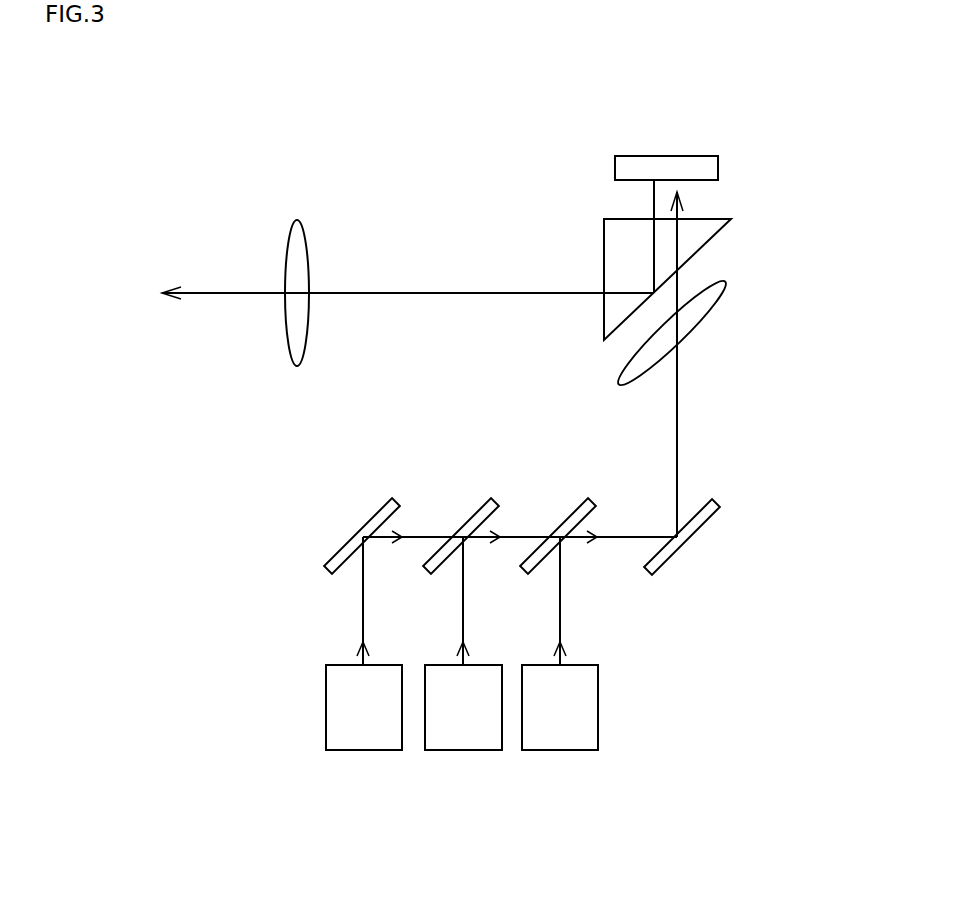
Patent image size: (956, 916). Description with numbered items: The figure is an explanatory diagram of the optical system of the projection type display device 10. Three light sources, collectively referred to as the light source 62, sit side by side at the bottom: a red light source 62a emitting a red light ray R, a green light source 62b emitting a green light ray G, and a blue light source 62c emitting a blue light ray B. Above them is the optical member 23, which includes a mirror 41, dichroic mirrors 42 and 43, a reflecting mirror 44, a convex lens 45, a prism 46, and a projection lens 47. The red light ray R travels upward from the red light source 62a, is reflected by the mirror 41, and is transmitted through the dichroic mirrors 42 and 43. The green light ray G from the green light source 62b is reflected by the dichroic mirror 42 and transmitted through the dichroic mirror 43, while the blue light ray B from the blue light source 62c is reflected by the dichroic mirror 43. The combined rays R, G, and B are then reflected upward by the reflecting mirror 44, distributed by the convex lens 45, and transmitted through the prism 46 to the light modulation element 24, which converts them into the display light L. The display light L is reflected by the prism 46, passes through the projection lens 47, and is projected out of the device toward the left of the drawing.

The projection type display device 10 is at (206, 133).
The optical member 23 is at (753, 212).
The light modulation element 24 is at (667, 156).
The mirror 41 is at (365, 523).
The dichroic mirror 42 is at (466, 523).
The dichroic mirror 43 is at (562, 523).
The reflecting mirror 44 is at (690, 540).
The convex lens 45 is at (622, 372).
The prism 46 is at (603, 232).
The projection lens 47 is at (297, 221).
The light source 62 is at (625, 823).
The red light source 62a is at (366, 751).
The green light source 62b is at (466, 751).
The blue light source 62c is at (566, 751).
The display light L is at (440, 292).
The red light ray R is at (362, 603).
The green light ray G is at (462, 603).
The blue light ray B is at (559, 603).